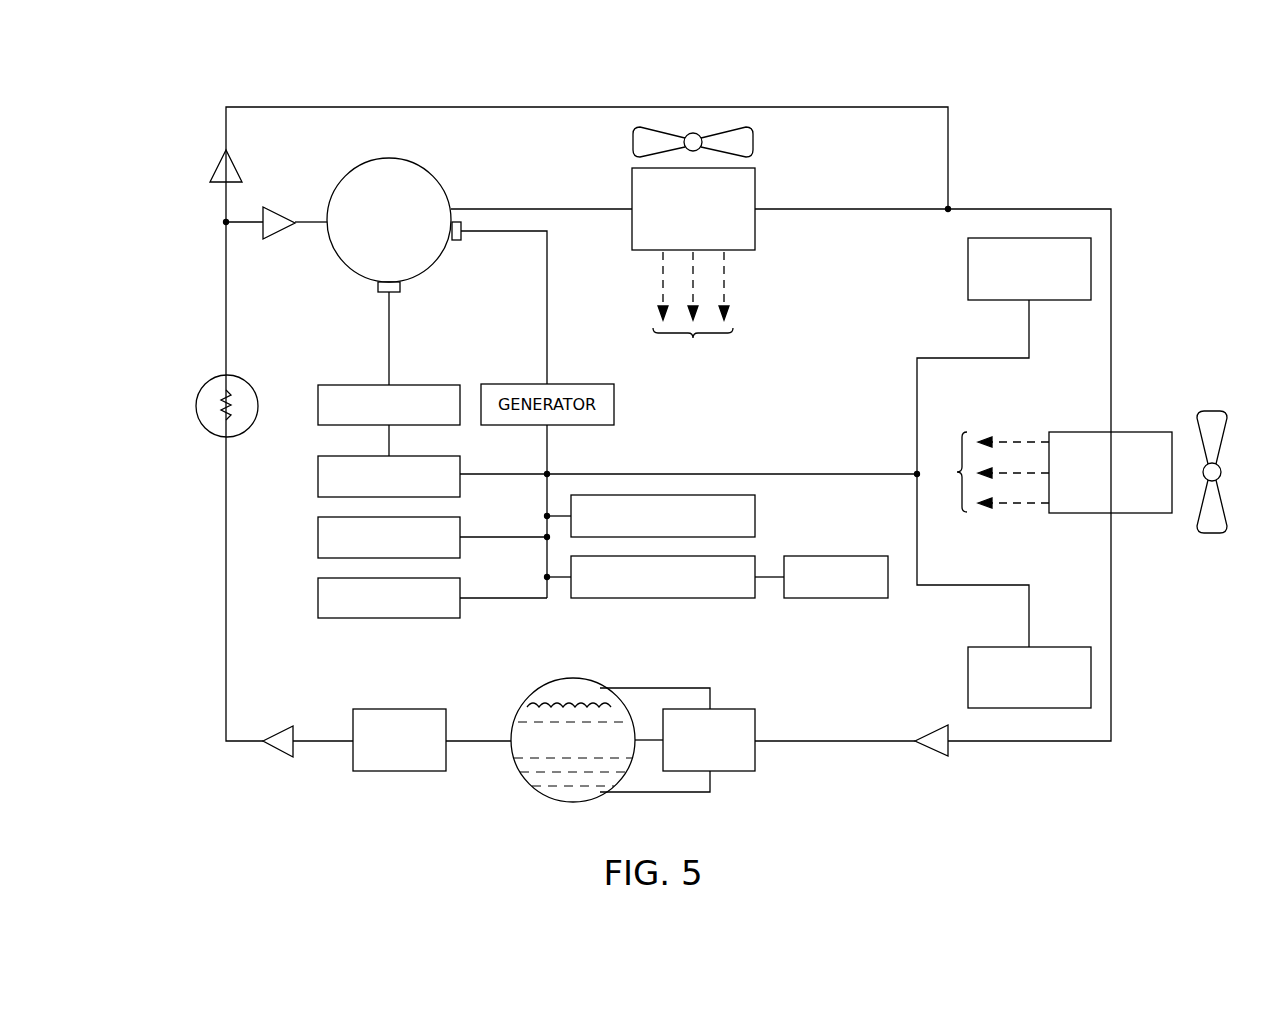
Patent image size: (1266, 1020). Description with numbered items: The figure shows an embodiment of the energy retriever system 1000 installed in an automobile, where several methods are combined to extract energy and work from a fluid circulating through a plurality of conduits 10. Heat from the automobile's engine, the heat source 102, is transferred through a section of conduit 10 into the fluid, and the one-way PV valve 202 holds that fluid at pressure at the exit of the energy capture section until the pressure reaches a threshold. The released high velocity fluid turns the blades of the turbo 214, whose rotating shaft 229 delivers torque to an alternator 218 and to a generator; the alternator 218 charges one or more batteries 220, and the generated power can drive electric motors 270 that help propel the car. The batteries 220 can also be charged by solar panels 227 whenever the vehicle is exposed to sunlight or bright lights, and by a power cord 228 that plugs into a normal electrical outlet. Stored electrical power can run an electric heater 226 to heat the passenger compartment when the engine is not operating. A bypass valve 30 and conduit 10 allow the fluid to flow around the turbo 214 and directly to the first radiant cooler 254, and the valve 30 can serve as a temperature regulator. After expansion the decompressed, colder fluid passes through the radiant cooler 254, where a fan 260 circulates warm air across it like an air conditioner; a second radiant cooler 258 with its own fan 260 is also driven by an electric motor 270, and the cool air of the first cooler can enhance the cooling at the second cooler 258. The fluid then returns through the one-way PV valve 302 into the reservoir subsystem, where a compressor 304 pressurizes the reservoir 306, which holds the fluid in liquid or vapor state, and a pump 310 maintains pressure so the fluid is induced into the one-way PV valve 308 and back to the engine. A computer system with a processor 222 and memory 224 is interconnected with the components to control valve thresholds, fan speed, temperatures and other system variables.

The conduit 10 is at (547, 104).
The bypass valve 30 is at (216, 170).
The heat source 102 is at (195, 405).
The one-way PV valve 202 is at (285, 207).
The turbo 214 is at (440, 185).
The alternator 218 is at (365, 383).
The battery 220 is at (318, 470).
The processor 222 is at (664, 600).
The memory 224 is at (838, 600).
The electric heater 226 is at (757, 520).
The solar panel 227 is at (318, 607).
The power cord 228 is at (318, 541).
The shaft 229 is at (463, 237).
The radiant cooler 254 is at (757, 232).
The second radiant cooler 258 is at (1130, 430).
The fan 260 is at (760, 143).
The electric motor 270 is at (1058, 302).
The one-way PV valve 302 is at (921, 758).
The compressor 304 is at (735, 772).
The reservoir 306 is at (572, 803).
The one-way PV valve 308 is at (276, 750).
The pump 310 is at (400, 773).
The energy retriever system 1000 is at (1083, 162).